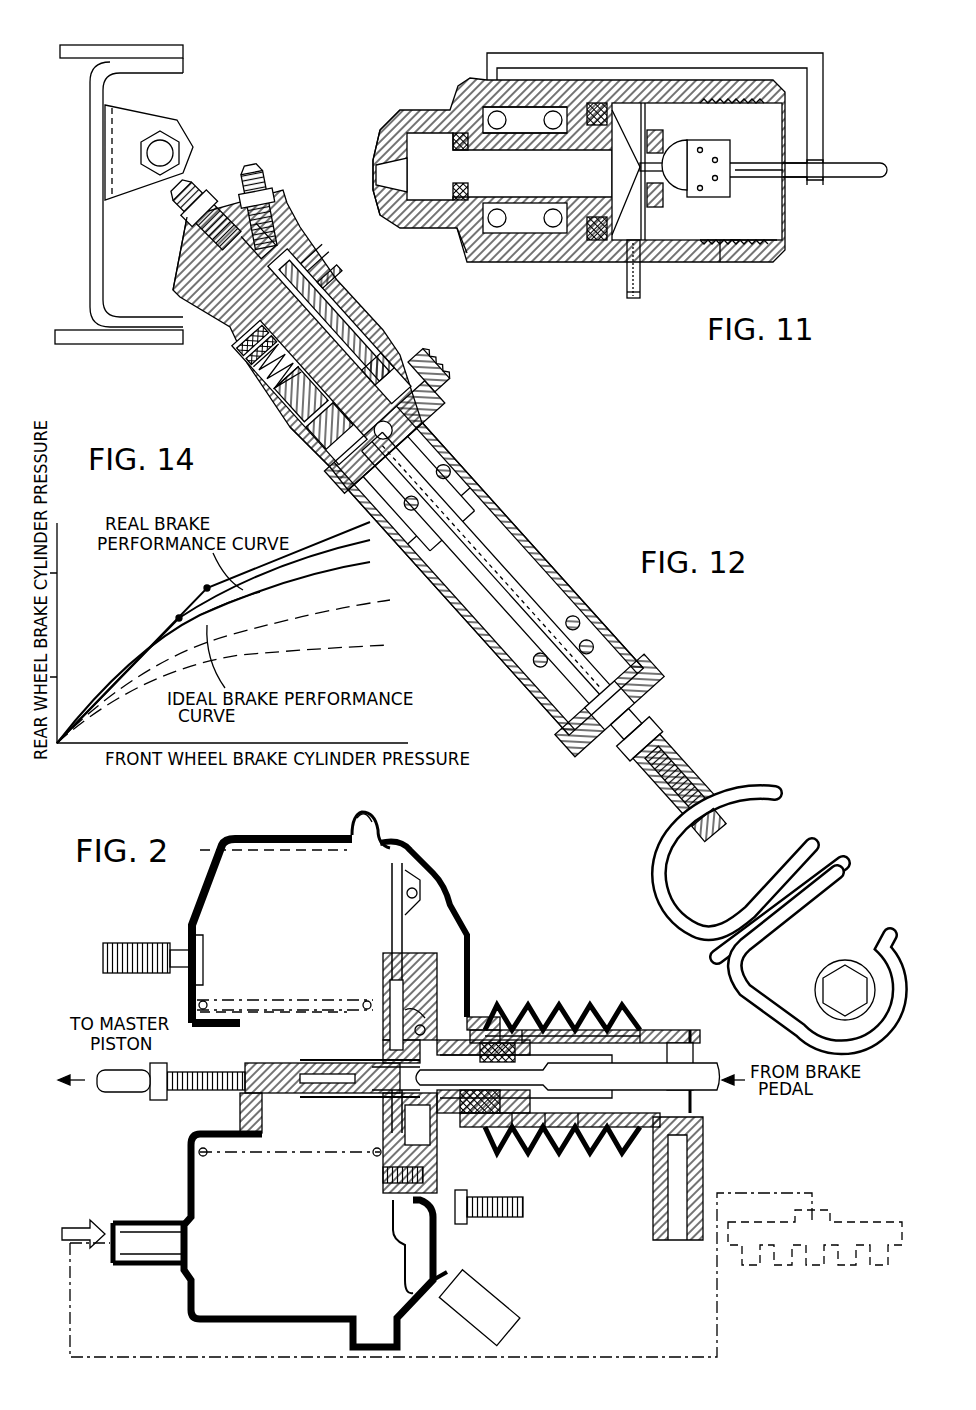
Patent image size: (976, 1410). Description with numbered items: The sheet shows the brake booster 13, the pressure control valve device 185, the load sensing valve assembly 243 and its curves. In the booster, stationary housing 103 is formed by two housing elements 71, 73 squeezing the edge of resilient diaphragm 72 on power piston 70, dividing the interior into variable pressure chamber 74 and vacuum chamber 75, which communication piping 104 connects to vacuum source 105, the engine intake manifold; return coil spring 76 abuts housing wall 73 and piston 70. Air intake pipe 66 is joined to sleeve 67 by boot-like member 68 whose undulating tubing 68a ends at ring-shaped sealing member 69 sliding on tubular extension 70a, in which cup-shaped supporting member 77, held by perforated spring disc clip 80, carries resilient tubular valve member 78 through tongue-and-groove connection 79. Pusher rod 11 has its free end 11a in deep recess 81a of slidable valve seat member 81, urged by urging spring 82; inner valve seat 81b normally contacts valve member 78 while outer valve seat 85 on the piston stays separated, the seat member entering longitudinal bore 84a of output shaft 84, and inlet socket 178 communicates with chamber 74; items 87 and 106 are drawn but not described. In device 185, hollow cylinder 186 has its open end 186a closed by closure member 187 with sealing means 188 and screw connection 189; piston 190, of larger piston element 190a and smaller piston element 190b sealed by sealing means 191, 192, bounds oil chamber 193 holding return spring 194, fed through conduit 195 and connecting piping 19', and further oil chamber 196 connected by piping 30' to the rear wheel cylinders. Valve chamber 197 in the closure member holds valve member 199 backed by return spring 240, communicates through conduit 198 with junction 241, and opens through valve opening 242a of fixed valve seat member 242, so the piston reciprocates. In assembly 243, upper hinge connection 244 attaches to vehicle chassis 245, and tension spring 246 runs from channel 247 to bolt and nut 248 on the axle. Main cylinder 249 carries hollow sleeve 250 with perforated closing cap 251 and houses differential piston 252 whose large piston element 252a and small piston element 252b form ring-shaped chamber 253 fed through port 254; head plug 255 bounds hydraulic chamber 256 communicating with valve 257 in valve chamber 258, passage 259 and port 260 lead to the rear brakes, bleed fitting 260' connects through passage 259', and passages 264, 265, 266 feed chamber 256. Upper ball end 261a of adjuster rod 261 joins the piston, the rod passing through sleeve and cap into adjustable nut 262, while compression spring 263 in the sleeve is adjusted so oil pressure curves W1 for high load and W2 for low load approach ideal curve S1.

In FIG. 11, the hydraulic pressure control valve device 185 is at (388, 140).
In FIG. 11, the hollow cylinder 186 is at (422, 222).
In FIG. 11, the open end 186a is at (730, 252).
In FIG. 11, the closure member 187 is at (770, 118).
In FIG. 11, the sealing means 188 is at (775, 248).
In FIG. 11, the screw connection 189 is at (705, 240).
In FIG. 11, the piston 190 is at (495, 235).
In FIG. 11, the larger piston element 190a is at (600, 205).
In FIG. 11, the smaller piston element 190b is at (440, 170).
In FIG. 11, the sealing means 191 is at (465, 205).
In FIG. 11, the sealing means 192 is at (600, 128).
In FIG. 11, the oil chamber 193 is at (472, 118).
In FIG. 11, the return spring 194 is at (485, 112).
In FIG. 11, the conduit 195 is at (818, 76).
In FIG. 11, the oil chamber 196 is at (635, 242).
In FIG. 11, the valve chamber 197 is at (728, 185).
In FIG. 11, the conduit 198 is at (792, 163).
In FIG. 11, the valve member 199 is at (638, 168).
In FIG. 11, the connecting piping 19' is at (844, 159).
In FIG. 11, the piping 30' is at (638, 312).
In FIG. 11, the return spring 240 is at (735, 245).
In FIG. 11, the junction 241 is at (812, 178).
In FIG. 11, the valve seat member 242 is at (666, 200).
In FIG. 11, the valve opening 242a is at (668, 145).
In FIG. 12, the load sensing valve assembly 243 is at (570, 500).
In FIG. 12, the upper hinge connection 244 is at (157, 140).
In FIG. 12, the vehicle chassis 245 is at (150, 52).
In FIG. 12, the tension spring 246 is at (795, 840).
In FIG. 12, the channel 247 is at (712, 795).
In FIG. 12, the bolt and nut 248 is at (832, 985).
In FIG. 12, the main cylinder 249 is at (340, 440).
In FIG. 12, the hollow sleeve 250 is at (502, 635).
In FIG. 12, the perforated closing cap 251 is at (622, 645).
In FIG. 12, the differential piston 252 is at (352, 356).
In FIG. 12, the large piston element 252a is at (330, 326).
In FIG. 12, the small piston element 252b is at (418, 372).
In FIG. 12, the ring-shaped chamber 253 is at (305, 395).
In FIG. 12, the port 254 is at (328, 422).
In FIG. 12, the head plug 255 is at (235, 265).
In FIG. 12, the hydraulic chamber 256 is at (277, 368).
In FIG. 12, the valve 257 is at (310, 300).
In FIG. 12, the valve chamber 258 is at (255, 332).
In FIG. 12, the passage 259 is at (232, 355).
In FIG. 12, the passage 259' is at (299, 240).
In FIG. 12, the port 260 is at (244, 384).
In FIG. 12, the bleed fitting 260' is at (223, 184).
In FIG. 12, the adjuster rod 261 is at (507, 568).
In FIG. 12, the upper ball end 261a is at (437, 412).
In FIG. 12, the adjustable nut 262 is at (645, 776).
In FIG. 12, the compression spring 263 is at (432, 548).
In FIG. 12, the passage 264 is at (390, 336).
In FIG. 12, the passage 265 is at (292, 276).
In FIG. 12, the passage 266 is at (245, 300).
In FIG. 14, the oil pressure characteristic curve W1 is at (208, 574).
In FIG. 14, the oil pressure characteristic curve W2 is at (179, 616).
In FIG. 14, the ideal curve S1 is at (218, 610).
In FIG. 2, the pusher rod 11 is at (706, 1076).
In FIG. 2, the free end 11a is at (369, 1070).
In FIG. 2, the brake booster 13 is at (480, 874).
In FIG. 2, the air intake pipe 66 is at (700, 1195).
In FIG. 2, the sleeve 67 is at (636, 1026).
In FIG. 2, the boot-like member 68 is at (695, 1012).
In FIG. 2, the undulating tubing 68a is at (606, 1022).
In FIG. 2, the sealing member 69 is at (521, 1142).
In FIG. 2, the power piston 70 is at (424, 985).
In FIG. 2, the tubular extension 70a is at (576, 1018).
In FIG. 2, the housing element 71 is at (406, 856).
In FIG. 2, the resilient diaphragm 72 is at (380, 848).
In FIG. 2, the housing element 73 is at (260, 838).
In FIG. 2, the variable pressure chamber 74 is at (436, 918).
In FIG. 2, the vacuum chamber 75 is at (293, 856).
In FIG. 2, the return coil spring 76 is at (283, 1000).
In FIG. 2, the cup-shaped supporting member 77 is at (581, 1142).
In FIG. 2, the resilient tubular valve member 78 is at (511, 1028).
In FIG. 2, the tongue-and-groove connection 79 is at (551, 1142).
In FIG. 2, the perforated spring disc clip 80 is at (612, 1058).
In FIG. 2, the slidable valve seat member 81 is at (344, 1075).
In FIG. 2, the deep recess 81a is at (448, 1160).
In FIG. 2, the inner valve seat 81b is at (496, 1140).
In FIG. 2, the urging spring 82 is at (392, 1020).
In FIG. 2, the output shaft 84 is at (285, 1092).
In FIG. 2, the longitudinal bore 84a is at (316, 1090).
In FIG. 2, the outer valve seat 85 is at (466, 1020).
In FIG. 2, the spring retainer 87 is at (536, 1018).
In FIG. 2, the stationary housing 103 is at (247, 827).
In FIG. 2, the communication piping 104 is at (156, 1263).
In FIG. 2, the vacuum source 105 is at (880, 1219).
In FIG. 2, the vacuum line 106 is at (650, 1357).
In FIG. 2, the inlet socket 178 is at (498, 1300).